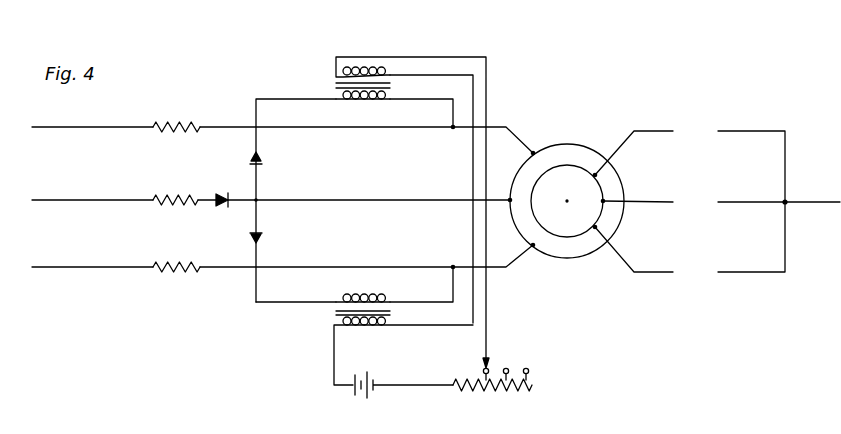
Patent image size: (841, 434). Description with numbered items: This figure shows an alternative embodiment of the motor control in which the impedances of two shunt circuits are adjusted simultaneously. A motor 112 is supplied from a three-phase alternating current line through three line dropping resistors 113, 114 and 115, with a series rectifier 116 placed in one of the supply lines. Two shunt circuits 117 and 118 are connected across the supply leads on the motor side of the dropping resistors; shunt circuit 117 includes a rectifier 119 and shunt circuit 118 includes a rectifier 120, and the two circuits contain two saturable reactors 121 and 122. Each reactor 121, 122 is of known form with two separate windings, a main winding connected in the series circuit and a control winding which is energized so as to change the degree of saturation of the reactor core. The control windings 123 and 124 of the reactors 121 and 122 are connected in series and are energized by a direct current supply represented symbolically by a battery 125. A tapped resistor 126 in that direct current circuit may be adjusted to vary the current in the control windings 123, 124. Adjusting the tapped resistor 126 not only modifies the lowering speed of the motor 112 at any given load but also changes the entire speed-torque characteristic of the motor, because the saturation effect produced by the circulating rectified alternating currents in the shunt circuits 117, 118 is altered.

The motor 112 is at (567, 144).
The line dropping resistor 113 is at (181, 113).
The line dropping resistor 114 is at (173, 194).
The line dropping resistor 115 is at (196, 262).
The series rectifier 116 is at (222, 193).
The shunt circuit 117 is at (287, 99).
The shunt circuit 118 is at (273, 303).
The rectifier 119 is at (259, 159).
The rectifier 120 is at (259, 237).
The saturable reactor 121 is at (367, 104).
The saturable reactor 122 is at (373, 300).
The control winding 123 is at (365, 72).
The control winding 124 is at (369, 328).
The battery 125 is at (366, 392).
The tapped resistor 126 is at (490, 388).